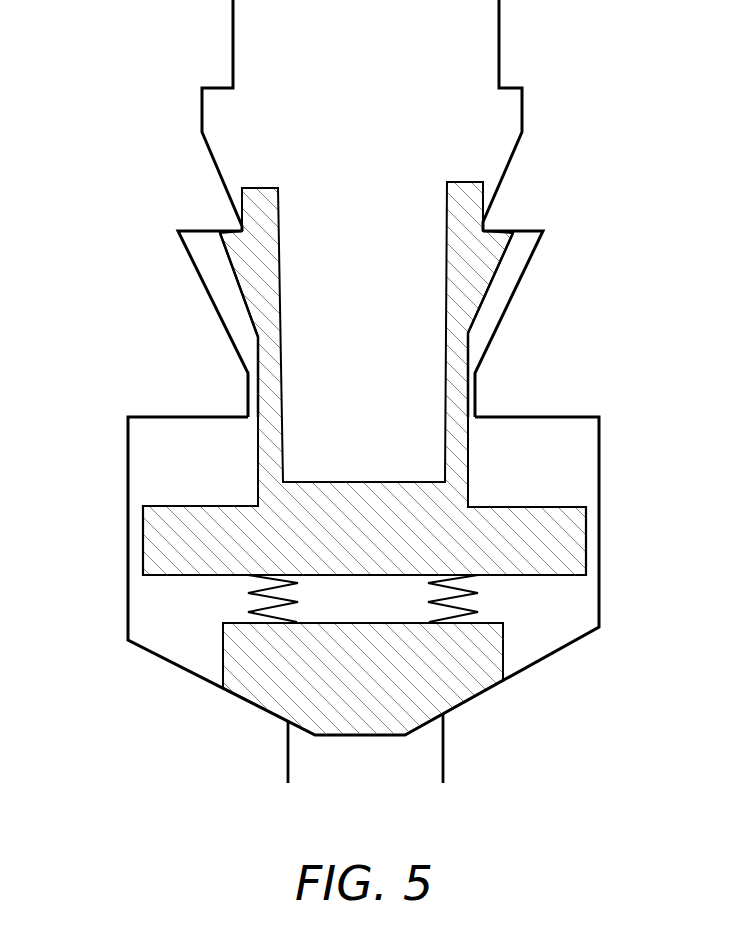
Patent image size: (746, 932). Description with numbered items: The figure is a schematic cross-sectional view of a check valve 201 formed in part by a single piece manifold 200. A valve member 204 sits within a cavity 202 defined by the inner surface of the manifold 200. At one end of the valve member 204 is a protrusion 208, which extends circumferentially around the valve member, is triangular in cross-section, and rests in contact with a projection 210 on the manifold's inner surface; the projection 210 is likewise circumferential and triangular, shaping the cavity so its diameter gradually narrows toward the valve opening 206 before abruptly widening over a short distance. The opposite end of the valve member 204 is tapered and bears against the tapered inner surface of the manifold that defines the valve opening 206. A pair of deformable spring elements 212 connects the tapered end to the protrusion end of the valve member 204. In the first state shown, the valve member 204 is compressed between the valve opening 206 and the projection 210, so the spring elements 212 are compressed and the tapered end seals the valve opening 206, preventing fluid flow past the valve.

The manifold 200 is at (175, 349).
The check valve 201 is at (131, 64).
The cavity 202 is at (362, 200).
The valve member 204 is at (575, 539).
The valve opening 206 is at (362, 772).
The protrusion 208 is at (495, 242).
The projection 210 is at (520, 202).
The spring elements 212 is at (253, 591).